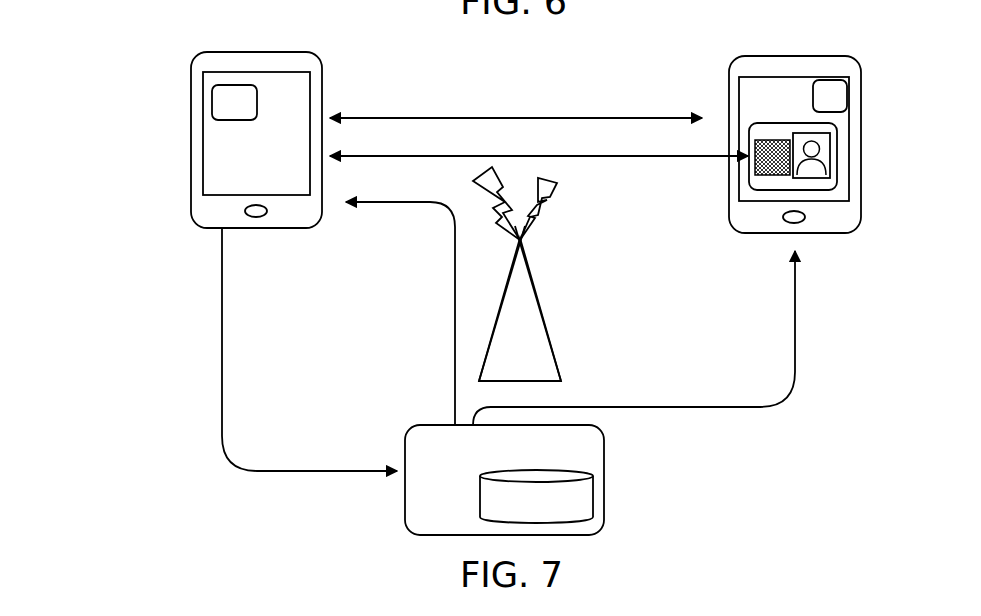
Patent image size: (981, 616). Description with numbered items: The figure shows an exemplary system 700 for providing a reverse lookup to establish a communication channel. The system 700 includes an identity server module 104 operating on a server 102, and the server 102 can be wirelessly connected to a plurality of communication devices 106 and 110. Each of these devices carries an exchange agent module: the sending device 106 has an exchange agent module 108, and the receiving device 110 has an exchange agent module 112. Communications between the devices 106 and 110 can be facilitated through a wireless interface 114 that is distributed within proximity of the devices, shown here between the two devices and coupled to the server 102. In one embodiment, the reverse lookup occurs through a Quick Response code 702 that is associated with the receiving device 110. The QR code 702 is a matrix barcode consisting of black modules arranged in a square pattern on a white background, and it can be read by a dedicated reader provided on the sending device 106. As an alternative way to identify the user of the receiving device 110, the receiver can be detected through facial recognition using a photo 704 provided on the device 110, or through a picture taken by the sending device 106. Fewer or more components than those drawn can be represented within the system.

The system 700 is at (74, 47).
The server 102 is at (605, 450).
The identity server module 104 is at (594, 497).
The communication device 106 is at (191, 161).
The exchange agent module 108 is at (212, 99).
The communication device 110 is at (861, 207).
The exchange agent module 112 is at (847, 92).
The wireless interface 114 is at (538, 302).
The Quick Response (QR) code 702 is at (756, 166).
The photo 704 is at (831, 157).